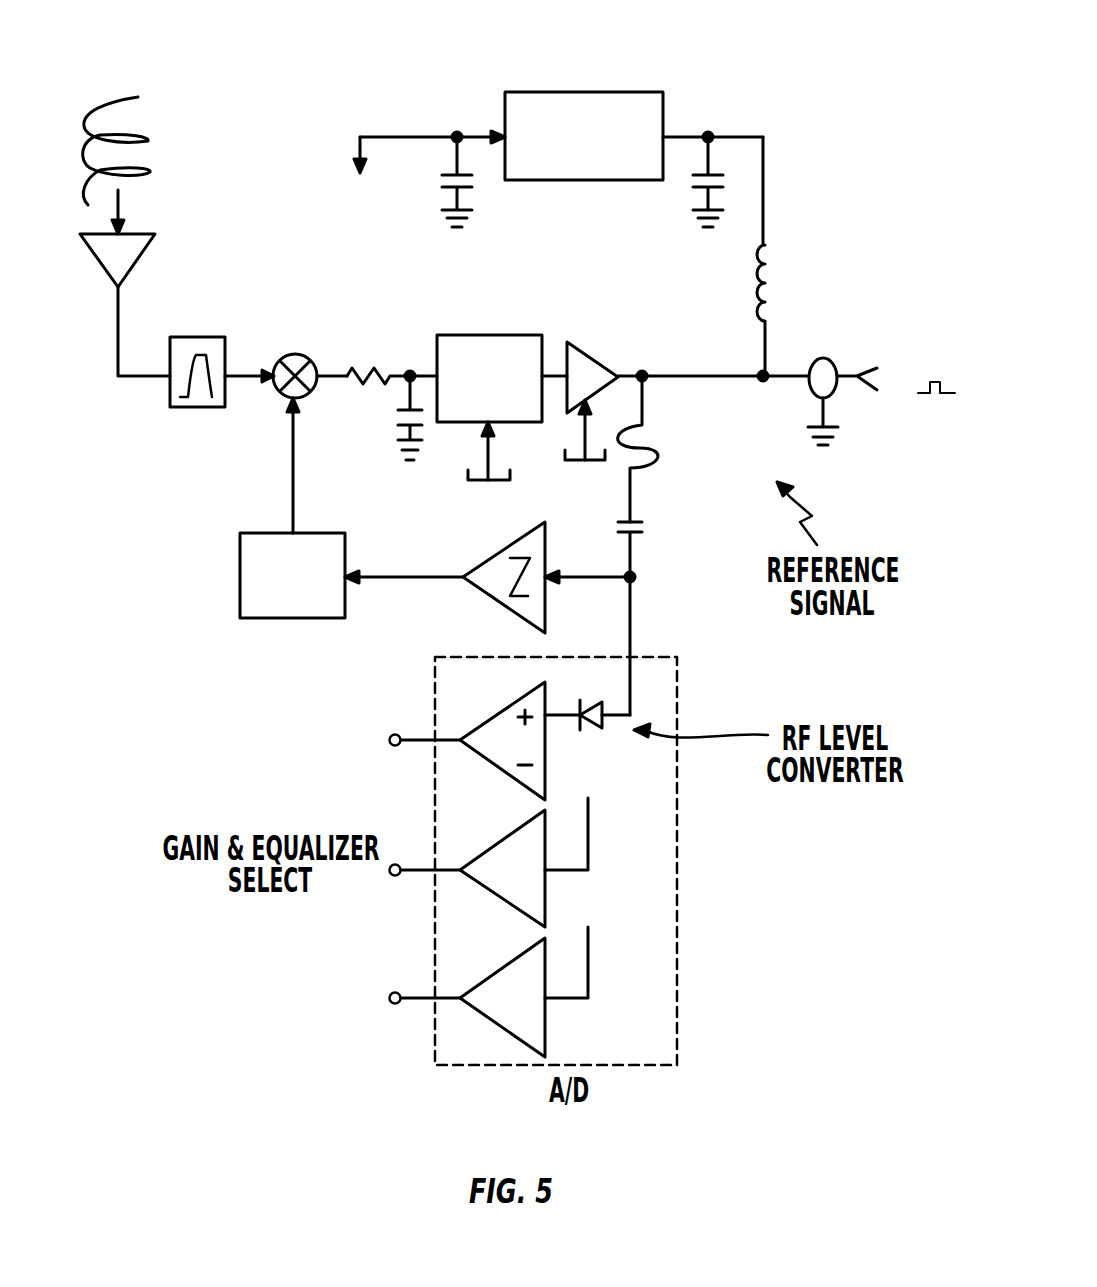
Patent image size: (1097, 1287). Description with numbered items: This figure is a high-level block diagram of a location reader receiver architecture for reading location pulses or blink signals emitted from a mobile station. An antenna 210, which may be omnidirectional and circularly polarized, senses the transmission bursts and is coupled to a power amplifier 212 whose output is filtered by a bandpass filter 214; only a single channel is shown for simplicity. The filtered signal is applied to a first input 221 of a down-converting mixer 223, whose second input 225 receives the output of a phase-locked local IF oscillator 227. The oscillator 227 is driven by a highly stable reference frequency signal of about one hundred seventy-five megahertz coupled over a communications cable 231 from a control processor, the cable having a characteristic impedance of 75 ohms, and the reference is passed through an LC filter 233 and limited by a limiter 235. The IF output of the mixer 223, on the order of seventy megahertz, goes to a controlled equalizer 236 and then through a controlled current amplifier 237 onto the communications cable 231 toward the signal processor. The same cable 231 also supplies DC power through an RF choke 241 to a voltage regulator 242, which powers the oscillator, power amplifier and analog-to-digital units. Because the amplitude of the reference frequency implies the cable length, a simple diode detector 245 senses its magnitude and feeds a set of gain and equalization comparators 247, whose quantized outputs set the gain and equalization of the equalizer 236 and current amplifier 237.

The antenna 210 is at (148, 132).
The power amplifier 212 is at (100, 258).
The bandpass filter 214 is at (200, 408).
The first input 221 is at (274, 362).
The down-converting mixer 223 is at (305, 316).
The second input 225 is at (288, 392).
The phase-locked local IF oscillator 227 is at (240, 577).
The communications cable 231 is at (705, 350).
The LC filter 233 is at (675, 413).
The limiter 235 is at (470, 548).
The controlled equalizer 236 is at (512, 305).
The controlled current amplifier 237 is at (610, 328).
The RF choke 241 is at (757, 270).
The voltage regulator 242 is at (668, 68).
The diode detector 245 is at (603, 708).
The gain and equalization comparators 247 is at (600, 955).
The output connector 75 is at (881, 401).